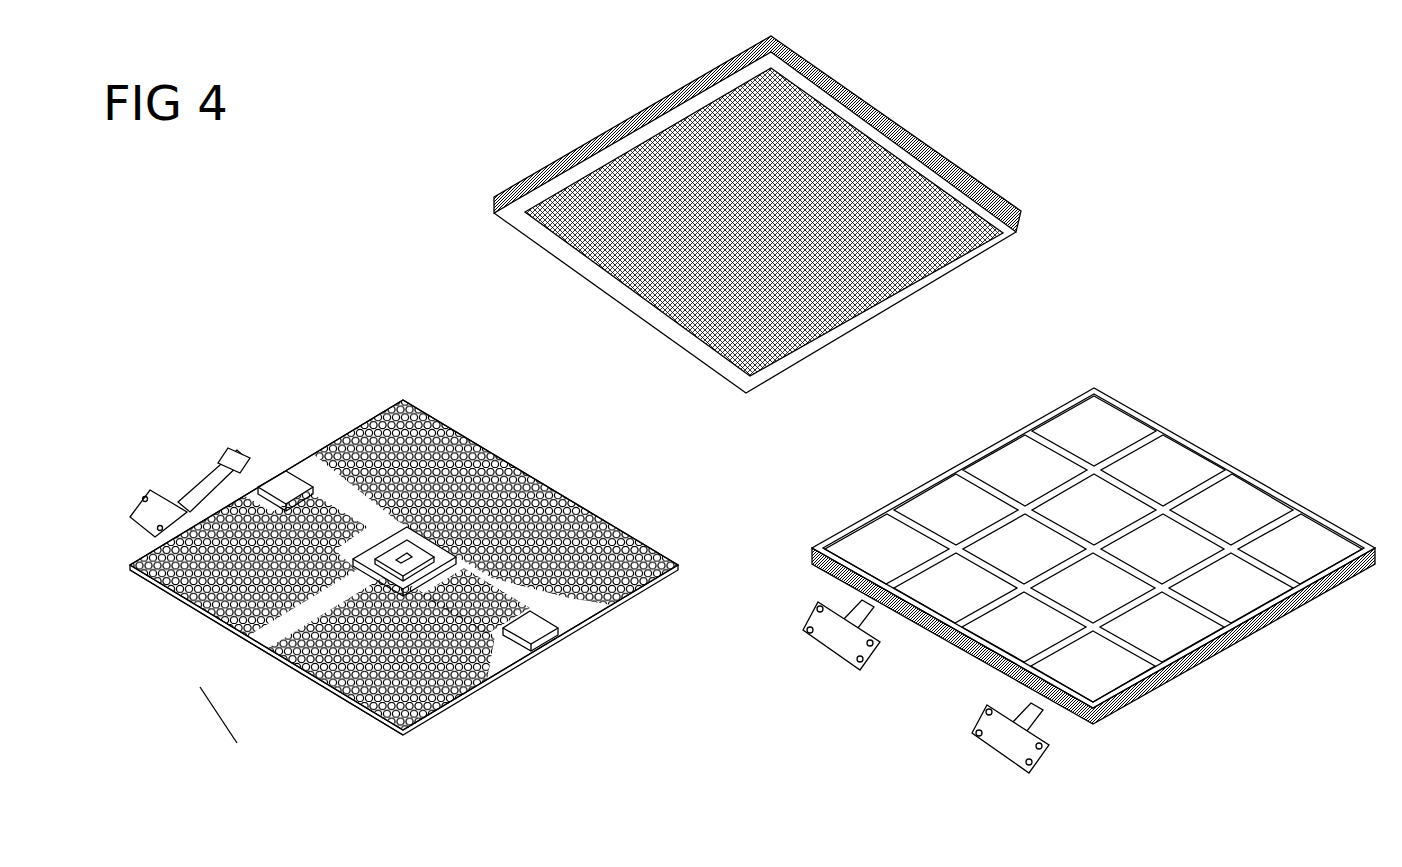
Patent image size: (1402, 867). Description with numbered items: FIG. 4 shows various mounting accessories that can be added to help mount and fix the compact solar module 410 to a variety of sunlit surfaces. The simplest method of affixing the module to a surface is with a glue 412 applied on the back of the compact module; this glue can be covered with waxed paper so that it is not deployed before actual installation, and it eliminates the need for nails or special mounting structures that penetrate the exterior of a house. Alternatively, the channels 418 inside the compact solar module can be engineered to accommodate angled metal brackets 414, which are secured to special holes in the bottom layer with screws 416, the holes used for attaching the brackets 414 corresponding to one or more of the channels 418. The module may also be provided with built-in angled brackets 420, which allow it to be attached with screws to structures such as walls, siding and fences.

The compact solar module 410 is at (829, 214).
The glue 412 is at (883, 217).
The angled metal brackets 414 is at (375, 563).
The screws 416 is at (343, 763).
The channels 418 is at (347, 690).
The built-in angled brackets 420 is at (1089, 580).